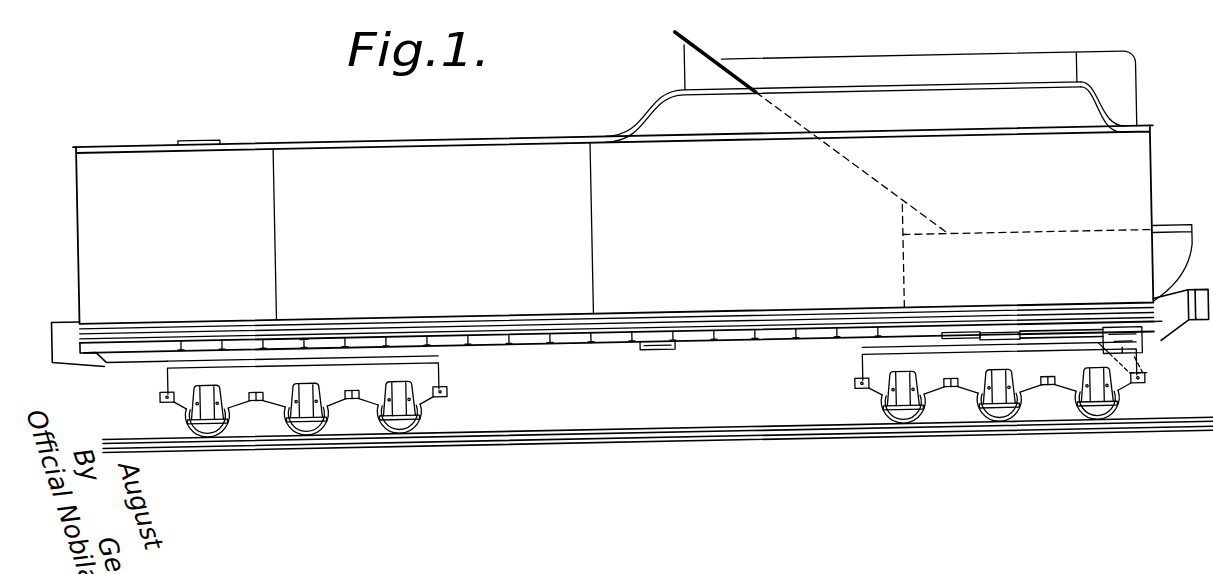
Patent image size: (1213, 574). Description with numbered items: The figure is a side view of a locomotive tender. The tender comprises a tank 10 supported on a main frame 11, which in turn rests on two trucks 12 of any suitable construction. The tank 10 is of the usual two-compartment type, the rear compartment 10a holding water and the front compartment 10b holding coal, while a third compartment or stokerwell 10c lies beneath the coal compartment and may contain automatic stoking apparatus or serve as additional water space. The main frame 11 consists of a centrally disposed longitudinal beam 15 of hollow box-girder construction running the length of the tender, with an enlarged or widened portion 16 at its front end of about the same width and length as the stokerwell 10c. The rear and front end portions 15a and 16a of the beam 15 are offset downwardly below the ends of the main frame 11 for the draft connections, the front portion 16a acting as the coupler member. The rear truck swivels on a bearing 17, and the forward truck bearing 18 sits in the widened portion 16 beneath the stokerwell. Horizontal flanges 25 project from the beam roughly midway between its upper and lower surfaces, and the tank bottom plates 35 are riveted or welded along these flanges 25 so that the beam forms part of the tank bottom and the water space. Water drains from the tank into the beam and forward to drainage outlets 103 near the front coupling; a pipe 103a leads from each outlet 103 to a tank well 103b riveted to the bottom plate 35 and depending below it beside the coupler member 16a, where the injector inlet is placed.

The tank 10 is at (529, 140).
The rear compartment 10a is at (322, 177).
The front compartment 10b is at (967, 176).
The stokerwell 10c is at (1028, 264).
The main frame 11 is at (592, 355).
The trucks 12 is at (421, 375).
The longitudinal beam 15 is at (476, 350).
The rear end portion 15a is at (114, 356).
The widened portion 16 is at (947, 350).
The coupler member 16a is at (1104, 343).
The rear truck bearing 17 is at (294, 356).
The forward truck bearing 18 is at (994, 353).
The horizontal flanges 25 is at (597, 345).
The bottom plates 35 is at (734, 343).
The drainage outlets 103 is at (1077, 343).
The pipe 103a is at (1094, 363).
The tank well 103b is at (1118, 359).